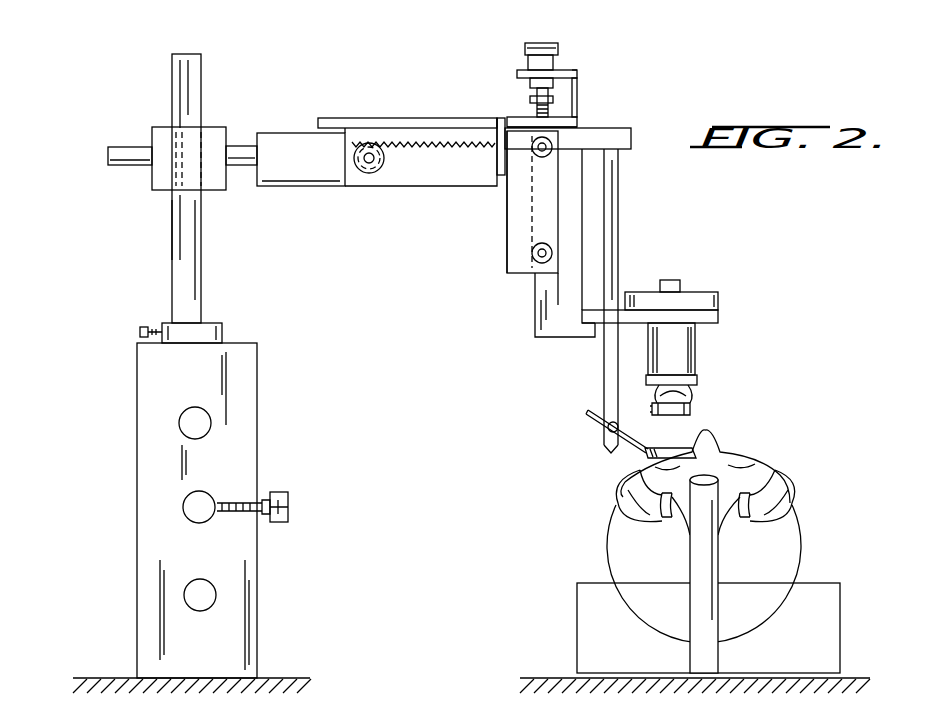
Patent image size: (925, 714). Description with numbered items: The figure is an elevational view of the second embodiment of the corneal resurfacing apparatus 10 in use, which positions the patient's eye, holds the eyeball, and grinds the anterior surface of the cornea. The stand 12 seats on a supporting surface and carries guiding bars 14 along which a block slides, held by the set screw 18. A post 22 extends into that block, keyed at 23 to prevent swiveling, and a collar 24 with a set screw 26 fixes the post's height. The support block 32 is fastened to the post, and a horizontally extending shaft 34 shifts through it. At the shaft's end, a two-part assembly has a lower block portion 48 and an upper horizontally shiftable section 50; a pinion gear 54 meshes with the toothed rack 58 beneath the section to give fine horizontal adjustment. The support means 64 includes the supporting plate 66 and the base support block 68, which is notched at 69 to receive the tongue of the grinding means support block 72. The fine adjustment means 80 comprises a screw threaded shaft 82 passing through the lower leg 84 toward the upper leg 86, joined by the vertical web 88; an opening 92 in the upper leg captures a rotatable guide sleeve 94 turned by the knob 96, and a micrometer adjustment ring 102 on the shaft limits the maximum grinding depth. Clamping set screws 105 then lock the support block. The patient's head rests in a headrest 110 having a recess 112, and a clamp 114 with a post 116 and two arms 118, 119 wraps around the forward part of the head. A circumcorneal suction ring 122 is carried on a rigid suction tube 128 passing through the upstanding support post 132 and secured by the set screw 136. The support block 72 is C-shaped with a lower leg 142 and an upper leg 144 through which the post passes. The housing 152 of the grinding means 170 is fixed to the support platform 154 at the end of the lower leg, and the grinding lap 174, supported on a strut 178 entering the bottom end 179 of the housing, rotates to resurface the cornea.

The corneal resurfacing apparatus 10 is at (122, 331).
The stand 12 is at (276, 426).
The guiding bars 14 is at (190, 582).
The set screw 18 is at (270, 497).
The post 22 is at (202, 268).
The key 23 is at (171, 230).
The collar 24 is at (223, 336).
The set screw 26 is at (160, 328).
The support block 32 is at (214, 127).
The horizontally extending shaft 34 is at (142, 147).
The lower block portion 48 is at (404, 187).
The upper horizontally shiftable section 50 is at (332, 118).
The pinion gear 54 is at (367, 173).
The toothed rack 58 is at (404, 136).
The support means 64 is at (499, 275).
The supporting plate 66 is at (497, 150).
The base support block 68 is at (507, 262).
The notch 69 is at (530, 206).
The grinding means support block 72 is at (556, 321).
The fine adjustment means 80 is at (518, 47).
The screw threaded shaft 82 is at (553, 100).
The lower leg 84 is at (516, 116).
The upper leg 86 is at (517, 73).
The vertical web 88 is at (553, 86).
The opening 92 is at (578, 77).
The guide sleeve 94 is at (554, 64).
The knob 96 is at (559, 47).
The micrometer adjustment ring 102 is at (582, 118).
The clamping set screws 105 is at (536, 146).
The headrest 110 is at (840, 622).
The head receiving recess 112 is at (770, 612).
The clamp 114 is at (688, 660).
The post 116 is at (720, 659).
The arm 118 is at (624, 494).
The arm 119 is at (790, 488).
The circumcorneal suction ring 122 is at (646, 457).
The suction tube 128 is at (591, 413).
The upstanding support post 132 is at (618, 220).
The set screw 136 is at (608, 432).
The lower leg 142 is at (593, 330).
The upper leg 144 is at (631, 141).
The housing 152 is at (718, 298).
The support platform 154 is at (718, 318).
The grinding means 170 is at (705, 350).
The grinding lap 174 is at (690, 412).
The rigid strut 178 is at (690, 401).
The bottom end 179 is at (697, 380).